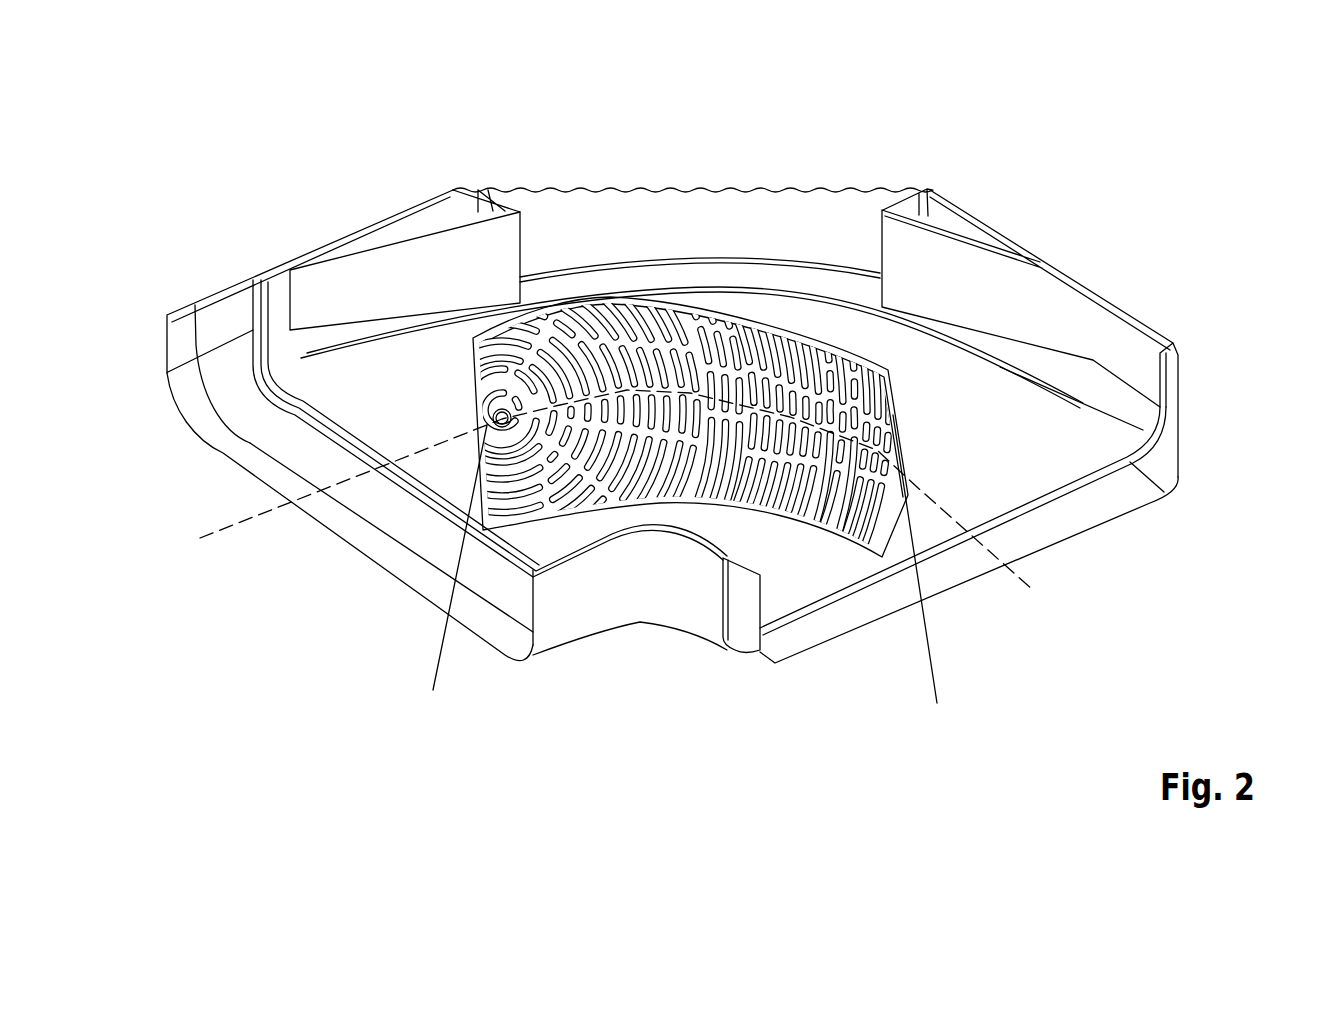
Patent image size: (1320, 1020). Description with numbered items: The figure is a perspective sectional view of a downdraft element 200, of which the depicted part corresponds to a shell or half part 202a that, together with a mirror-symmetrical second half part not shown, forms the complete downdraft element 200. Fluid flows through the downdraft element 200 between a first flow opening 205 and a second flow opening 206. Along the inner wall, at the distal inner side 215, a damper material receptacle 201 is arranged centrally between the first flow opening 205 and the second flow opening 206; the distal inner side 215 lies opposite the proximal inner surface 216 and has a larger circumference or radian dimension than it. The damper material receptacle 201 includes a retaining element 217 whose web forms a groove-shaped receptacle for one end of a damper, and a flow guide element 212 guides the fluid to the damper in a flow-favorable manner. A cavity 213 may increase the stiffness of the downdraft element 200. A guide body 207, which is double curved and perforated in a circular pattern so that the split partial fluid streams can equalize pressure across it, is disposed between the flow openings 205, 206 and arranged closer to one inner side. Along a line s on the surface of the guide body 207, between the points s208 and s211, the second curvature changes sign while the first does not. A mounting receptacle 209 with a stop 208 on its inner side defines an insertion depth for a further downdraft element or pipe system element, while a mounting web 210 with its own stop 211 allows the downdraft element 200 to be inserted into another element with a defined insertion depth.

The downdraft element 200 is at (227, 128).
The damper material receptacle 201 is at (640, 233).
The half part 202a is at (1100, 330).
The first flow opening 205 is at (317, 571).
The second flow opening 206 is at (985, 588).
The guide body 207 is at (677, 485).
The stop 208 is at (430, 508).
The mounting receptacle 209 is at (260, 437).
The mounting web 210 is at (743, 597).
The stop 211 is at (1080, 485).
The flow guide element 212 is at (393, 270).
The cavity 213 is at (957, 222).
The distal inner side 215 is at (755, 176).
The proximal inner surface 216 is at (594, 640).
The retaining element 217 is at (503, 233).
The line s is at (204, 545).
The point s208 is at (459, 575).
The point s211 is at (943, 578).